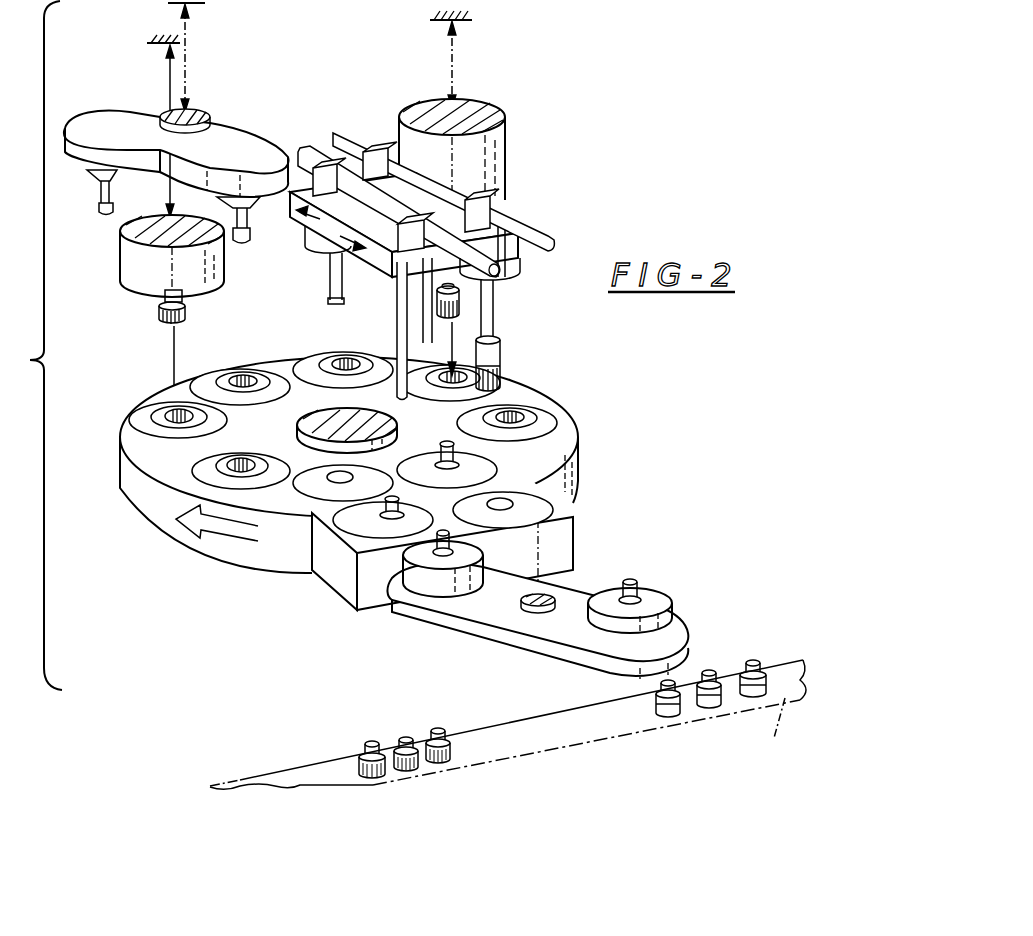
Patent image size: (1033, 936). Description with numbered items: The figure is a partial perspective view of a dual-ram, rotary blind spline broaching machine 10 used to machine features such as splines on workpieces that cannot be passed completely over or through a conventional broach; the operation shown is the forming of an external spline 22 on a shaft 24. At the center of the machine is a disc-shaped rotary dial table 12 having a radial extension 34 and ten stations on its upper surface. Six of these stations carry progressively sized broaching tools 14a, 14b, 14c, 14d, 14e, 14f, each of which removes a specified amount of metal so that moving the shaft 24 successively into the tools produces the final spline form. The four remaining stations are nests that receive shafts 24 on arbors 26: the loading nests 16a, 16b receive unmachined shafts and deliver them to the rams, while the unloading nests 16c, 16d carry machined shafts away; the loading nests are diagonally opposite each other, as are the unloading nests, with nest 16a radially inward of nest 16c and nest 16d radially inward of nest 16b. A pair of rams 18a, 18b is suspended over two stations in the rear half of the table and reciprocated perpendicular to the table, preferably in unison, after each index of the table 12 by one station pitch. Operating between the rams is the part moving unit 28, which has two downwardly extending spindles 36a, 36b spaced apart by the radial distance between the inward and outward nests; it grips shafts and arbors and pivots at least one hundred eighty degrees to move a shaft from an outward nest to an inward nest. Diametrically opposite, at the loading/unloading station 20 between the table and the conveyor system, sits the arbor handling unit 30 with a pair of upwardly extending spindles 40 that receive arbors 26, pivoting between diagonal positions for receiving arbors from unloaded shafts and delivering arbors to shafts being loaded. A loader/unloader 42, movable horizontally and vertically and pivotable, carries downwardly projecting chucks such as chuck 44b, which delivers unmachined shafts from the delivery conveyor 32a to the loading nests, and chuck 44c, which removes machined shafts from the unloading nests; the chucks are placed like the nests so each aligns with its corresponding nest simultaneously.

The blind spline broaching machine 10 is at (31, 345).
The rotary dial table 12 is at (131, 404).
The broaching tool 14a is at (558, 399).
The broaching tool 14b is at (526, 415).
The broaching tool 14c is at (343, 353).
The broaching tool 14d is at (232, 370).
The broaching tool 14e is at (152, 428).
The broaching tool 14f is at (200, 467).
The loading nest 16a is at (490, 467).
The loading nest 16b is at (365, 532).
The unloading nest 16c is at (555, 496).
The unloading nest 16d is at (315, 485).
The ram 18a is at (124, 266).
The ram 18b is at (505, 143).
The loading/unloading station 20 is at (516, 754).
The external spline 22 is at (158, 317).
The shaft 24 is at (160, 306).
The arbor 26 is at (404, 352).
The part moving unit 28 is at (227, 131).
The arbor handling unit 30 is at (497, 643).
The delivery conveyor 32a is at (763, 735).
The radial extension 34 is at (572, 548).
The spindle 36a is at (250, 232).
The spindle 36b is at (100, 208).
The spindle 40 is at (637, 585).
The loader/unloader 42 is at (535, 218).
The chuck 44b is at (318, 243).
The chuck 44c is at (520, 274).